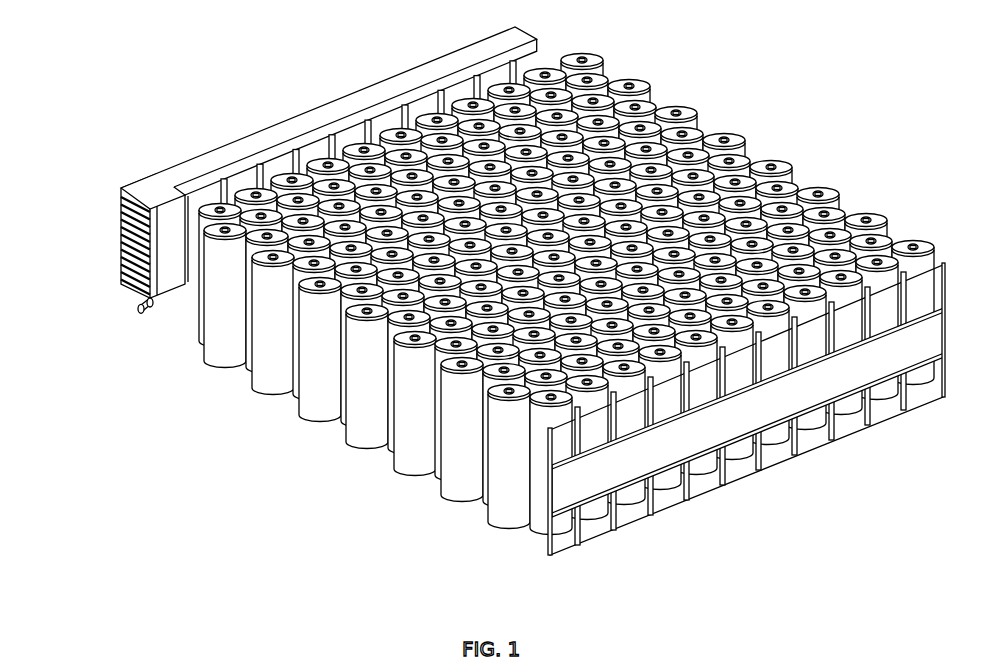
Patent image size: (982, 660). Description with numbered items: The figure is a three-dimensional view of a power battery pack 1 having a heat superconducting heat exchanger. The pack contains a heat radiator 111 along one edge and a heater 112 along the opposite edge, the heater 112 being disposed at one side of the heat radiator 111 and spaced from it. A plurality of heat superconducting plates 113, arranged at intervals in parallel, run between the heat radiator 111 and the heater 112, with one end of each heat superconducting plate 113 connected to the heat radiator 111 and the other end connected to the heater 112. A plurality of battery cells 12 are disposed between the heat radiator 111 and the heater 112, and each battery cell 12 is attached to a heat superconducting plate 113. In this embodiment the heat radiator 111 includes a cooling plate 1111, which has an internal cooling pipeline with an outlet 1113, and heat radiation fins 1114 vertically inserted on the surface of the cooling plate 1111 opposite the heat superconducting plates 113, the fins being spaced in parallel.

The power battery pack 1 is at (133, 28).
The heat radiator 111 is at (257, 77).
The cooling plate 1111 is at (242, 155).
The heat radiation fin 1114 is at (168, 182).
The outlet 1113 is at (143, 310).
The heat superconducting plate 113 is at (345, 380).
The battery cell 12 is at (507, 460).
The heater 112 is at (592, 477).